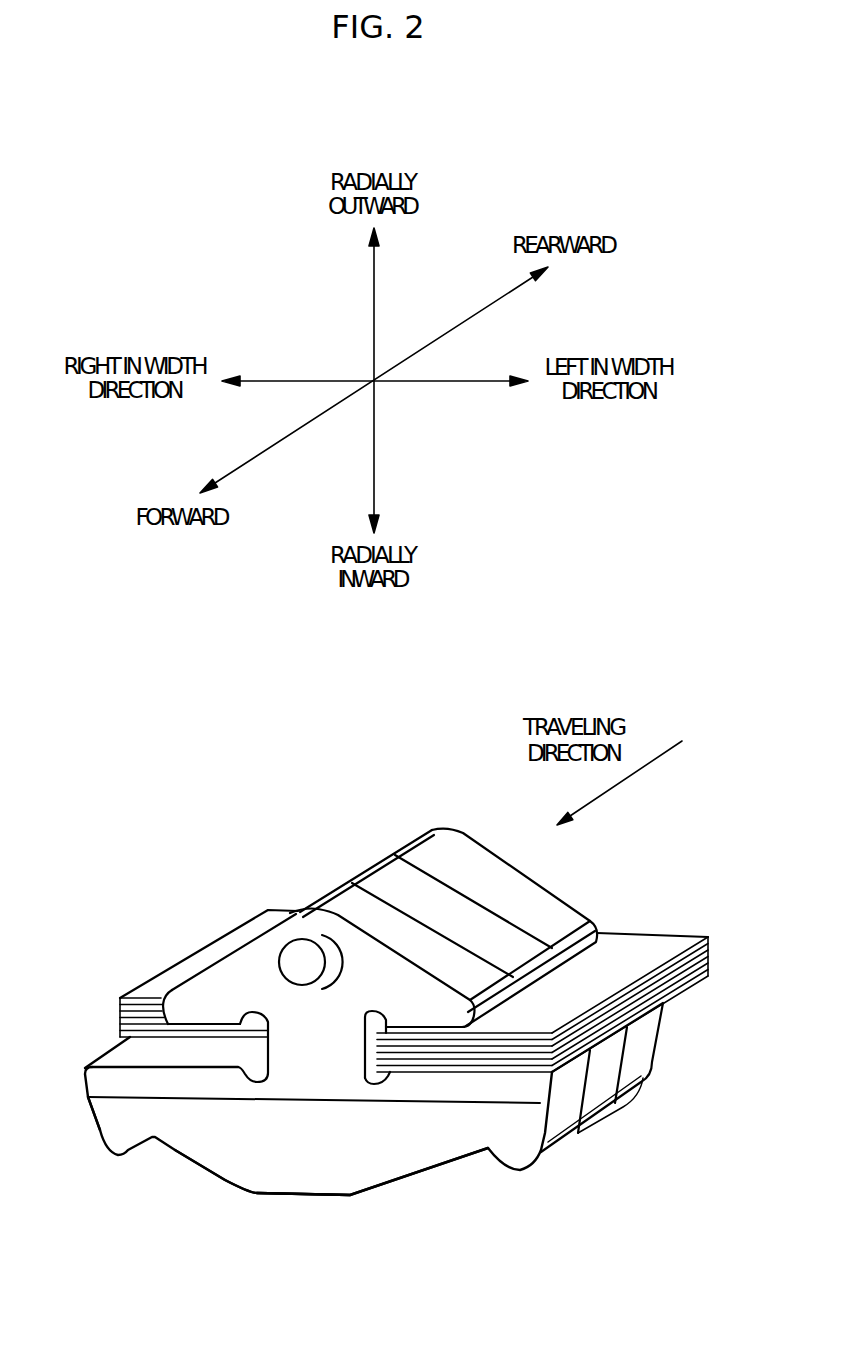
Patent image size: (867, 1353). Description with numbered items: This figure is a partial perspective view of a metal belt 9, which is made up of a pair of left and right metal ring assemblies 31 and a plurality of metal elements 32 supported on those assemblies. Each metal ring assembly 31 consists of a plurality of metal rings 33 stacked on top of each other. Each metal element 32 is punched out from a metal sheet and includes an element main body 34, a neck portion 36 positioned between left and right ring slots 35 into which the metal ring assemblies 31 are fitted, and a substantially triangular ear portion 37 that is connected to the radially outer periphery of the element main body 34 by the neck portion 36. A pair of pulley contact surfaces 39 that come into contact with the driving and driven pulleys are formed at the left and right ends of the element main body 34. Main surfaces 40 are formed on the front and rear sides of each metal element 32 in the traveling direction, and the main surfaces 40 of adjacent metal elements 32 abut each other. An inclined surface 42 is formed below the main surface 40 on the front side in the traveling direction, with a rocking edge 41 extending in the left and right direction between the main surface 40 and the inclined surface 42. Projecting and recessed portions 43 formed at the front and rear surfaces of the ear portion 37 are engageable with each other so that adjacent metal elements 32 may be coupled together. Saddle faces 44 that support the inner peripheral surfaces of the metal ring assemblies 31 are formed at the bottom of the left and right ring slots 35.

The metal belt 9 is at (356, 782).
The metal ring assembly 31 is at (146, 953).
The metal element 32 is at (400, 1214).
The metal ring 33 is at (120, 1004).
The element main body 34 is at (108, 1122).
The ring slot 35 is at (252, 1063).
The neck portion 36 is at (340, 1197).
The ear portion 37 is at (223, 972).
The pulley contact surface 39 is at (557, 1120).
The main surface 40 is at (299, 1049).
The rocking edge 41 is at (272, 1100).
The inclined surface 42 is at (292, 1162).
The projecting and recessed portions 43 is at (290, 952).
The saddle face 44 is at (125, 1057).